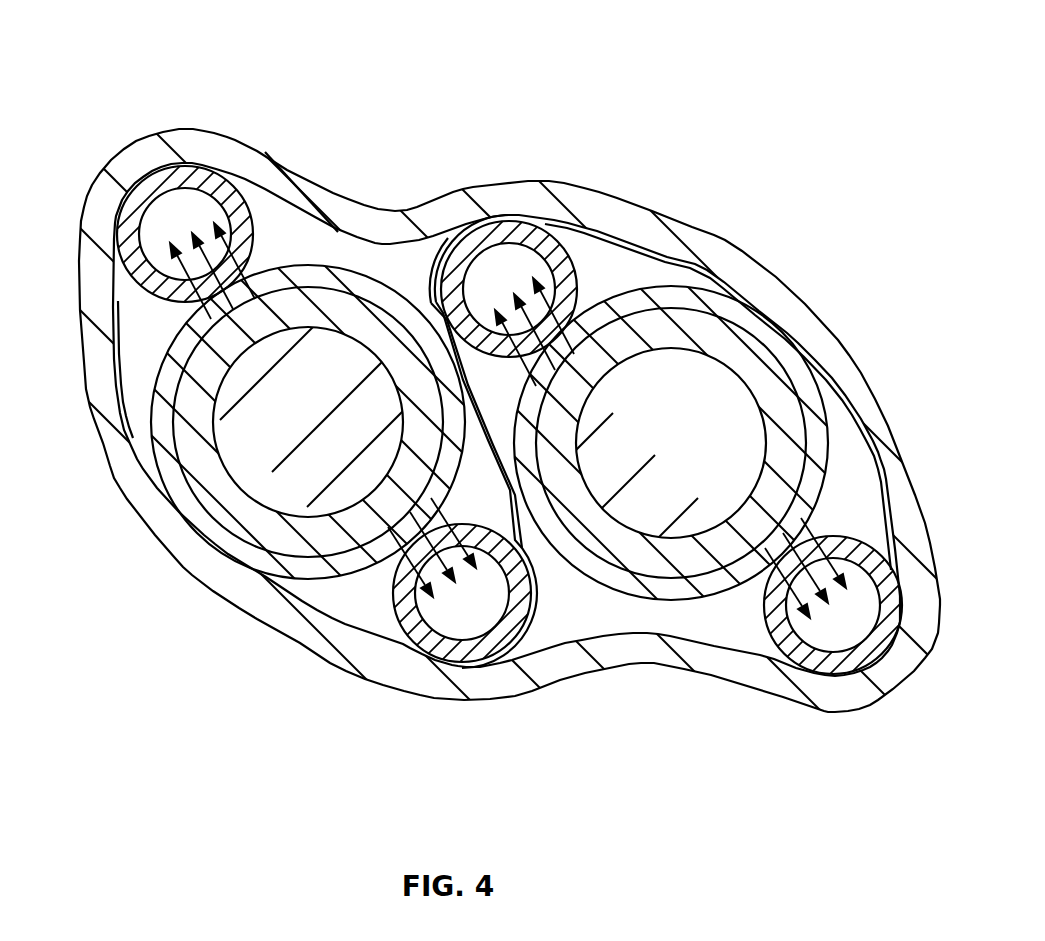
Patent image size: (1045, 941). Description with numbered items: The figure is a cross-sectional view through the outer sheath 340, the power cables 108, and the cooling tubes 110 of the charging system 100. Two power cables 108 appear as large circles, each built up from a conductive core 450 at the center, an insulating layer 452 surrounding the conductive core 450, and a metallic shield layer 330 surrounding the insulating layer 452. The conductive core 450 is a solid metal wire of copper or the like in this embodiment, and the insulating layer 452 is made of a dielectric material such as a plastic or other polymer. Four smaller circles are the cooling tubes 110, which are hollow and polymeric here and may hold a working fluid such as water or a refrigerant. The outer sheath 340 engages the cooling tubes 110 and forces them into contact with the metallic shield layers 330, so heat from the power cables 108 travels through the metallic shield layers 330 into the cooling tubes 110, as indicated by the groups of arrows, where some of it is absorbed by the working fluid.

The charging system 100 is at (389, 41).
The power cable 108 is at (664, 275).
The cooling tube 110 is at (220, 187).
The metallic shield layer 330 is at (177, 493).
The outer sheath 340 is at (567, 203).
The conductive core 450 is at (267, 440).
The insulating layer 452 is at (187, 445).